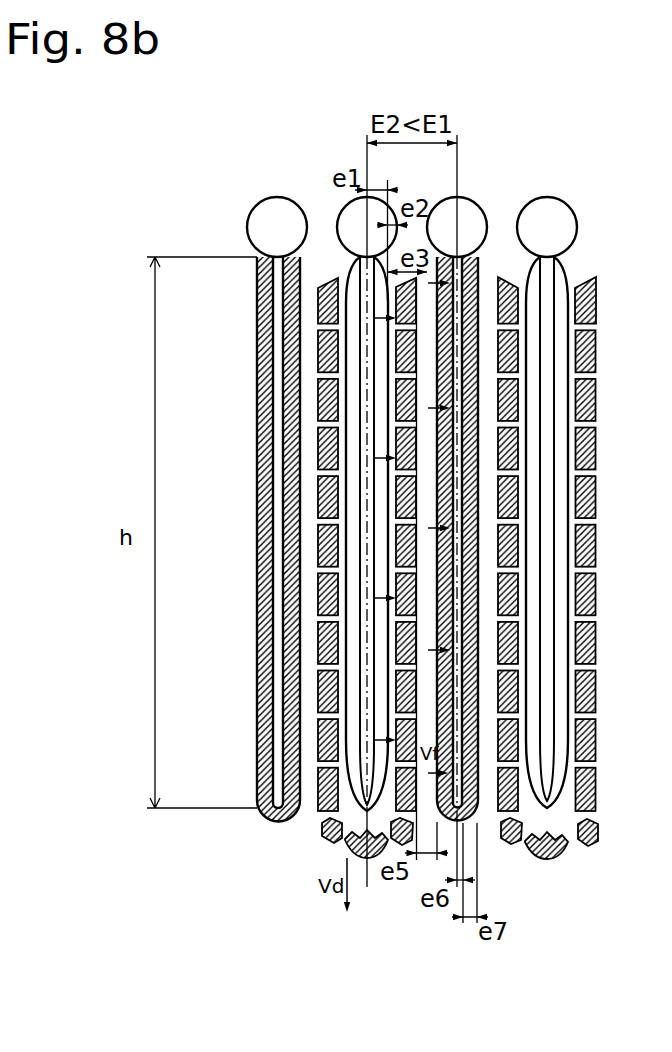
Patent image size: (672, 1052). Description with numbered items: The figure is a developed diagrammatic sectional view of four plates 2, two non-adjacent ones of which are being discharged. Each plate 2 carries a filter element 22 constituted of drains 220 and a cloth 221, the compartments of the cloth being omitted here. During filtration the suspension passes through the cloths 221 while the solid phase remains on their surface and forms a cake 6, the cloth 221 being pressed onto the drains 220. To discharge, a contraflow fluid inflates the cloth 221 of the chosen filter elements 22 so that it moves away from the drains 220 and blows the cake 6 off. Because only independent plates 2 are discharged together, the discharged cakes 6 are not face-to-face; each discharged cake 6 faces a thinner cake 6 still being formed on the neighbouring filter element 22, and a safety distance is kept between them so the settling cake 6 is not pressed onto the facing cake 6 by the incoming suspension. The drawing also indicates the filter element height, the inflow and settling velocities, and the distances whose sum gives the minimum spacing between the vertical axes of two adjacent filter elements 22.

The plate 2 is at (219, 509).
The filter element 22 is at (355, 297).
The drain 220 is at (258, 432).
The cloth 221 is at (266, 552).
The cake 6 is at (255, 700).